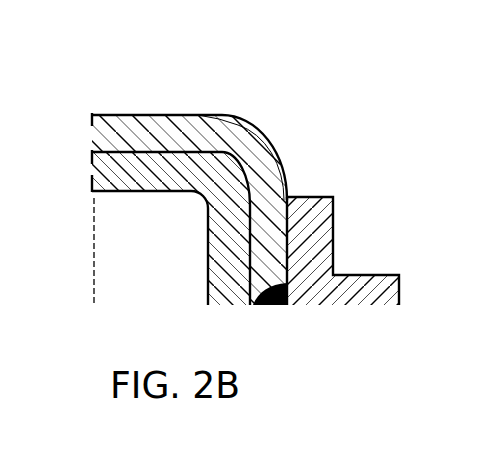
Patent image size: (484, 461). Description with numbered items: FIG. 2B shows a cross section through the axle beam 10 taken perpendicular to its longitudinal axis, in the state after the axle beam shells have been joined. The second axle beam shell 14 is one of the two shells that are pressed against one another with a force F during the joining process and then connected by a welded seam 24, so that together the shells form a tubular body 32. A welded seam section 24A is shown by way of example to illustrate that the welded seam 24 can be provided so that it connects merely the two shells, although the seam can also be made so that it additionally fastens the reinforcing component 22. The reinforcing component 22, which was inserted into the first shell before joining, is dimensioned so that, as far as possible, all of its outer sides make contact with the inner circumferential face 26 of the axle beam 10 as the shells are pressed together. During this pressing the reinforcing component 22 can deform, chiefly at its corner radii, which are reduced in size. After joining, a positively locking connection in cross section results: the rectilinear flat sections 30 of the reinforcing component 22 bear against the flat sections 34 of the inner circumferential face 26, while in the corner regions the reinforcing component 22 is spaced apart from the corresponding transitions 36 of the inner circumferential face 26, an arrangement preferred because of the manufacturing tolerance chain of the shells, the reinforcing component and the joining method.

The axle beam 10 is at (127, 28).
The second axle beam shell 14 is at (195, 130).
The reinforcing component 22 is at (93, 208).
The welded seam 24 is at (289, 195).
The welded seam section 24A is at (210, 253).
The inner circumferential face 26 is at (160, 150).
The flat sections of the reinforcing component 30 is at (208, 275).
The tubular body 32 is at (300, 147).
The flat sections of the inner circumferential face 34 is at (160, 150).
The transitions of the inner circumferential face 36 is at (270, 268).
The force F is at (92, 108).